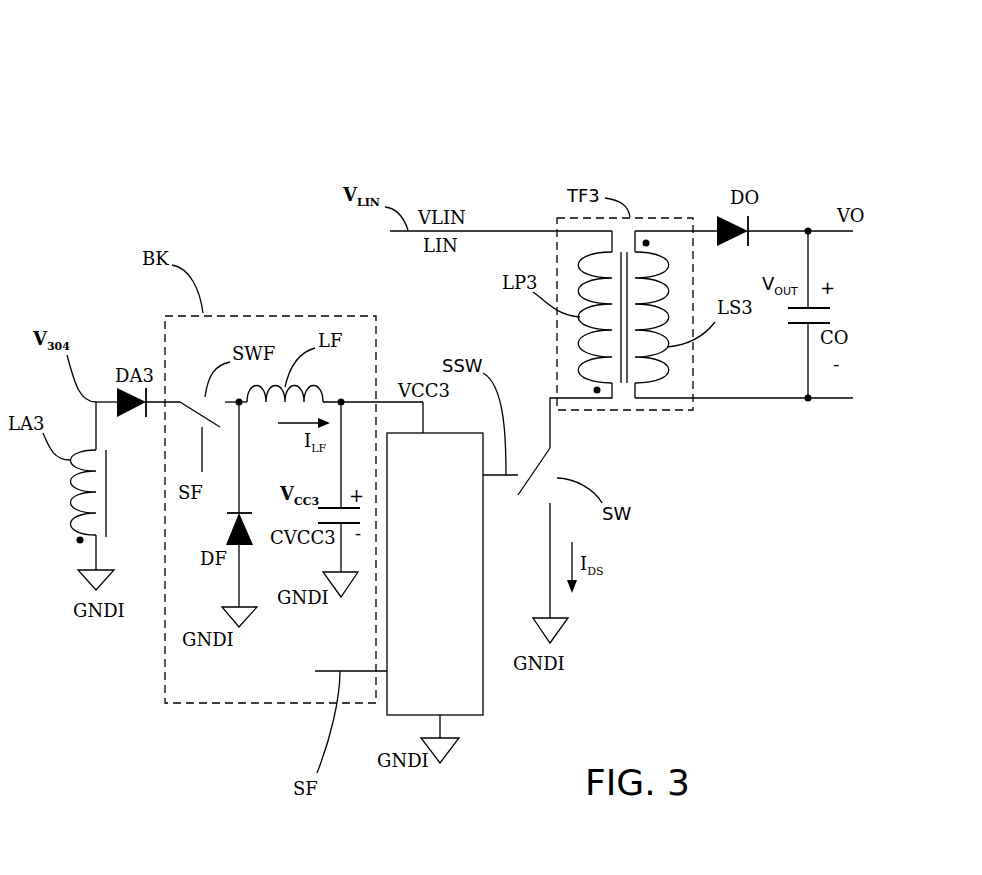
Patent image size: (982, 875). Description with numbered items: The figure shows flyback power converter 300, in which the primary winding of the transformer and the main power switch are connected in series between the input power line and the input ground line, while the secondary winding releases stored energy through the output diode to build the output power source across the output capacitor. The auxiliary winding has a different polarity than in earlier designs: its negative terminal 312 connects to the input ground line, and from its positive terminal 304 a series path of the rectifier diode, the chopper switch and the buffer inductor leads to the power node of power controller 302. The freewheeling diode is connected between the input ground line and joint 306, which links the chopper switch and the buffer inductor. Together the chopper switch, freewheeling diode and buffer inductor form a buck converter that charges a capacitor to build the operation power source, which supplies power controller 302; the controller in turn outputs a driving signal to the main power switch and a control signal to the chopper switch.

The flyback power converter 300 is at (290, 176).
The power controller 302 is at (452, 605).
The positive terminal 304 is at (96, 425).
The joint 306 is at (240, 432).
The negative terminal 312 is at (96, 550).